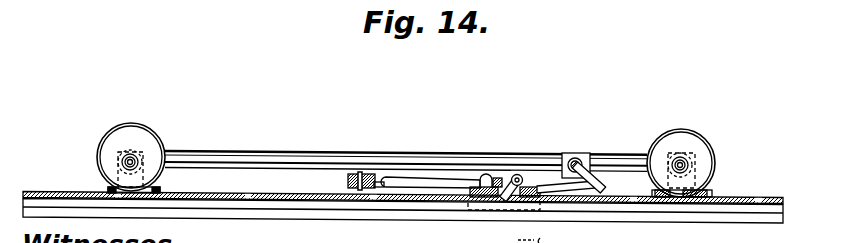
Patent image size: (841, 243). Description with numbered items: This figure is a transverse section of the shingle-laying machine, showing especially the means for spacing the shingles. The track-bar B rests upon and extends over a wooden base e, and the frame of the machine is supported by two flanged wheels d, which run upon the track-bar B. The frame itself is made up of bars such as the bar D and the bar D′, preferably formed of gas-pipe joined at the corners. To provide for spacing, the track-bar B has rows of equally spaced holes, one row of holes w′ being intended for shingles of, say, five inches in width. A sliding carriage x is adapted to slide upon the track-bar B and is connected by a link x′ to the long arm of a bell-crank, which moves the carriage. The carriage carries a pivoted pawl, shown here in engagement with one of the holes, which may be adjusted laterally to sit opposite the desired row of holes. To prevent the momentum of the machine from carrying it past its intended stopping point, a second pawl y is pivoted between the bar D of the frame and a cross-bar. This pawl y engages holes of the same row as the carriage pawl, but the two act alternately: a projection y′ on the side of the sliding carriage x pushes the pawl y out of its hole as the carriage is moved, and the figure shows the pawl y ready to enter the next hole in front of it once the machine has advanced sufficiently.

The track-bar B is at (411, 194).
The wooden base e is at (403, 223).
The holes w′ is at (447, 188).
The flanged wheel d is at (150, 136).
The bar D′ is at (122, 163).
The bar D is at (406, 151).
The link x′ is at (425, 180).
The sliding carriage x is at (507, 176).
The projection y′ is at (551, 185).
The second pawl y is at (618, 160).